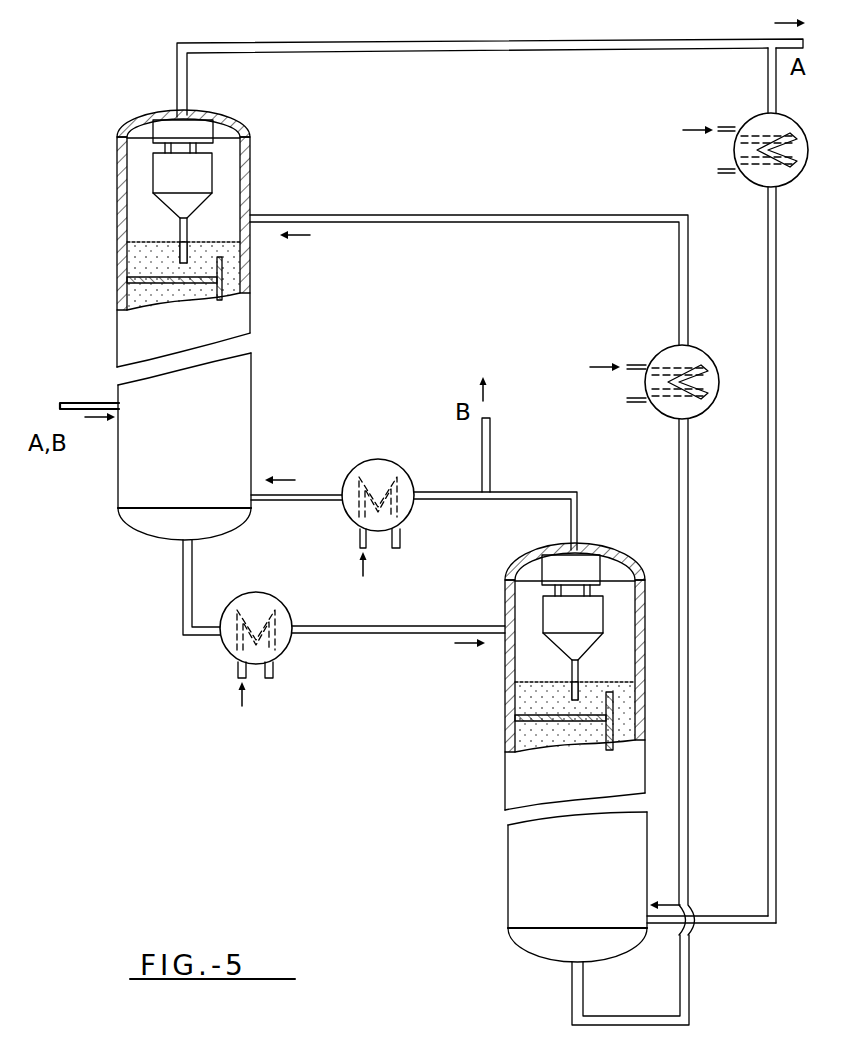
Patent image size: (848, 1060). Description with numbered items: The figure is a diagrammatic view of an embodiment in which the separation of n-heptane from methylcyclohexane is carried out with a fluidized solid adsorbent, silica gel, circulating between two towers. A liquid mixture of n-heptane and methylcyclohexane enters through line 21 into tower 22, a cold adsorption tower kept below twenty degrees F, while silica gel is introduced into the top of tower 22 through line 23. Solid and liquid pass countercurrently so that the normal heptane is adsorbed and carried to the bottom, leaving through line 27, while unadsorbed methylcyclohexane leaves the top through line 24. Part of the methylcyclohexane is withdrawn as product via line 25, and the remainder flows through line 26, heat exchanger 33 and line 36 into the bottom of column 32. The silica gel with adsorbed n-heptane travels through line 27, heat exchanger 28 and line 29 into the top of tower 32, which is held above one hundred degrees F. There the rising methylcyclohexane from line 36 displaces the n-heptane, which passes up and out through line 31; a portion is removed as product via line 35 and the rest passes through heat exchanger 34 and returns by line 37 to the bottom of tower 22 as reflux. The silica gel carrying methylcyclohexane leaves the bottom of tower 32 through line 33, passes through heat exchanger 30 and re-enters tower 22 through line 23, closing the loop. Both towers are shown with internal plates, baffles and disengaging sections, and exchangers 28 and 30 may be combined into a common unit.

The feed line 21 is at (117, 402).
The adsorption tower 22 is at (118, 484).
The silica gel inlet line 23 is at (358, 213).
The overhead line 24 is at (262, 41).
The product line 25 is at (778, 38).
The recycle line 26 is at (768, 85).
The bottoms line 27 is at (183, 563).
The heat exchanger 28 is at (275, 600).
The solids transfer line 29 is at (420, 624).
The heat exchanger 30 is at (688, 412).
The n-heptane outlet line 31 is at (577, 512).
The desorption tower 32 is at (508, 830).
The heat exchanger / silica gel outlet line 33 is at (752, 183).
The heat exchanger 34 is at (414, 512).
The n-heptane product line 35 is at (492, 424).
The methylcyclohexane return line 36 is at (772, 912).
The reflux line 37 is at (322, 505).